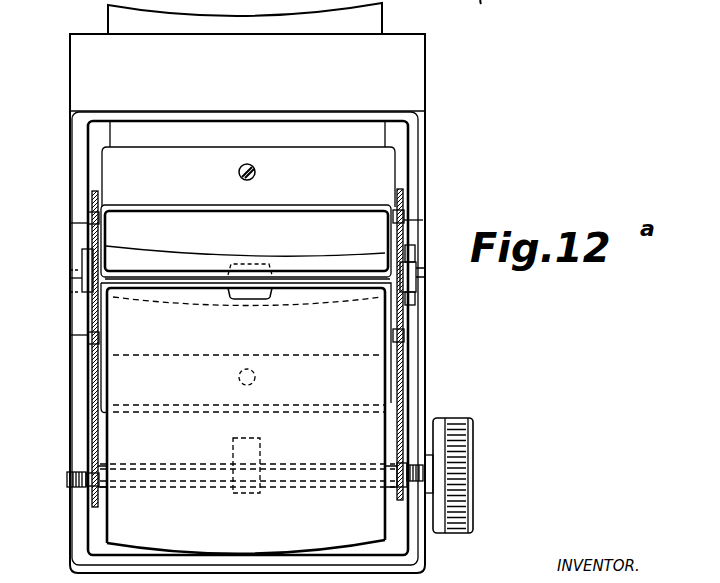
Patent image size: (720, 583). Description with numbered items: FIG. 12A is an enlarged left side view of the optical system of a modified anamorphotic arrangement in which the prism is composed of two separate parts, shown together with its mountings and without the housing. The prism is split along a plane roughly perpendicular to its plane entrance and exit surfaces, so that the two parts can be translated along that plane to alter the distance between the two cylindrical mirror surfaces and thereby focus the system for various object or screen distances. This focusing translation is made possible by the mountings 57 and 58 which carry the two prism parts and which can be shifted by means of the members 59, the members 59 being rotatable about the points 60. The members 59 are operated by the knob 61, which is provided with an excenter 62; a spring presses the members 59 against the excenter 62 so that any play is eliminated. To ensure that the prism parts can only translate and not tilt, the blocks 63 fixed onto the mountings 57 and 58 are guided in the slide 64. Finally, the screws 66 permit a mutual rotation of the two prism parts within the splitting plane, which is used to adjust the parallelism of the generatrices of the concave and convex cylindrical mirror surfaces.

The mounting 57 is at (385, 173).
The mounting 58 is at (404, 393).
The members 59 is at (402, 372).
The points 60 is at (104, 276).
The knob 61 is at (473, 418).
The excenter 62 is at (262, 449).
The blocks 63 is at (412, 252).
The slide 64 is at (413, 305).
The screws 66 is at (108, 262).